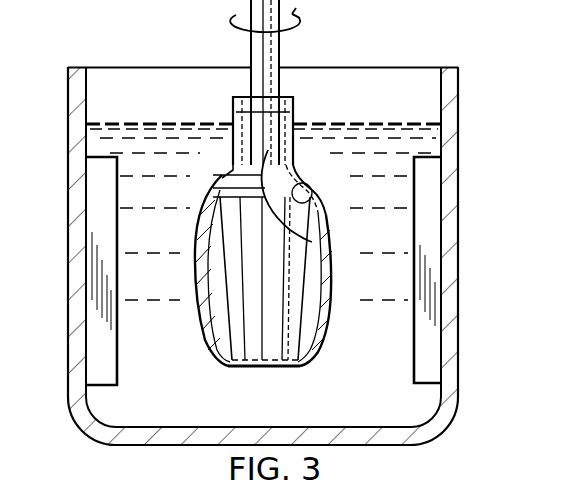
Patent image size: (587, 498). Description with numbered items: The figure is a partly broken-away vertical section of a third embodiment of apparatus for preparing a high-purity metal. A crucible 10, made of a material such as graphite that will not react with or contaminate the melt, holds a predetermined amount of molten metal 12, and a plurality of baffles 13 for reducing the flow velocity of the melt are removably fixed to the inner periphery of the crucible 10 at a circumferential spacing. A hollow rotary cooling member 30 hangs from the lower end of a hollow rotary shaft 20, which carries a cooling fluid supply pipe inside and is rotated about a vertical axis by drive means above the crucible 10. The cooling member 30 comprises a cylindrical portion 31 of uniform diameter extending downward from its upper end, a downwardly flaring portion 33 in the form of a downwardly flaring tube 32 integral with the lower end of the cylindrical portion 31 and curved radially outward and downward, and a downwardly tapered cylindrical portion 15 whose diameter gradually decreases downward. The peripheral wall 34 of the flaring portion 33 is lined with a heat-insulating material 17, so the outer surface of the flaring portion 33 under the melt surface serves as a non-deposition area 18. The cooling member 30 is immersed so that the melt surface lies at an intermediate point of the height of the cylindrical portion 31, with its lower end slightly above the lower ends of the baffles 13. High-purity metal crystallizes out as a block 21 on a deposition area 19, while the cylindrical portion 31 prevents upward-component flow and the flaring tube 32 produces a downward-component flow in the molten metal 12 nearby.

The crucible 10 is at (450, 263).
The molten metal 12 is at (405, 410).
The baffles 13 is at (98, 345).
The downwardly tapered cylindrical portion 15 is at (252, 327).
The heat-insulating material 17 is at (303, 192).
The non-deposition area 18 is at (236, 166).
The deposition area 19 is at (218, 288).
The hollow rotary shaft 20 is at (268, 50).
The block 21 is at (312, 323).
The hollow rotary cooling member 30 is at (292, 371).
The cylindrical portion 31 is at (240, 138).
The downwardly flaring tube 32 is at (220, 178).
The downwardly flaring portion 33 is at (234, 122).
The peripheral wall 34 is at (283, 158).